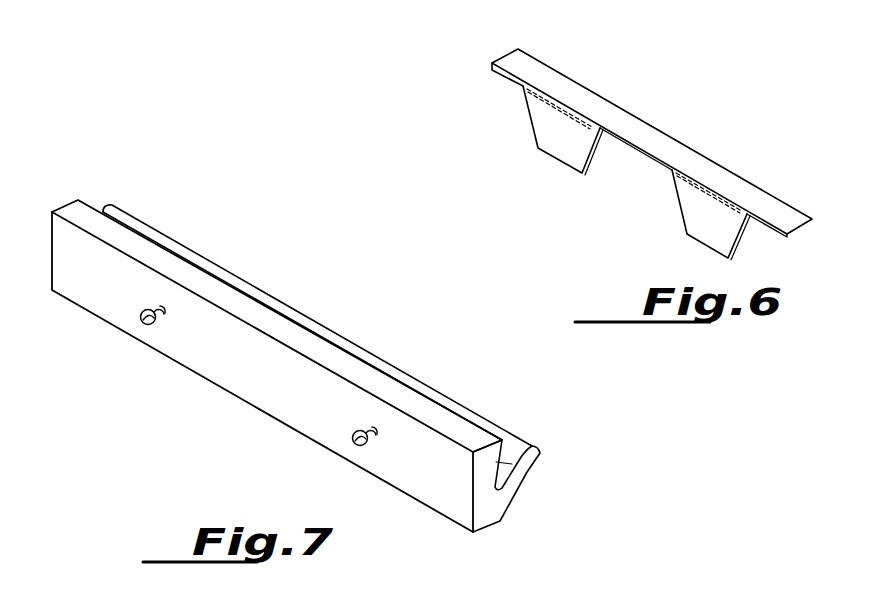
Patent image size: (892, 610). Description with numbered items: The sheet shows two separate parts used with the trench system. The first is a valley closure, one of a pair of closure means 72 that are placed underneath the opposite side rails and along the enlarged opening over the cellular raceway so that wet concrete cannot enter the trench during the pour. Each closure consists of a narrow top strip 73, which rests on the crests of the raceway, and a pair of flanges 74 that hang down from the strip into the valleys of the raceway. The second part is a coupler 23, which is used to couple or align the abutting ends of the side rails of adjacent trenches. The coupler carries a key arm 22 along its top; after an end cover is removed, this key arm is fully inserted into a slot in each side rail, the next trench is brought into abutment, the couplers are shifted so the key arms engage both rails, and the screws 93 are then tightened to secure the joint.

In FIG. 6, the closure means 72 is at (640, 141).
In FIG. 6, the top strip 73 is at (668, 148).
In FIG. 6, the flanges 74 is at (555, 133).
In FIG. 7, the coupler 23 is at (340, 366).
In FIG. 7, the key arm 22 is at (533, 458).
In FIG. 7, the screws 93 is at (162, 330).